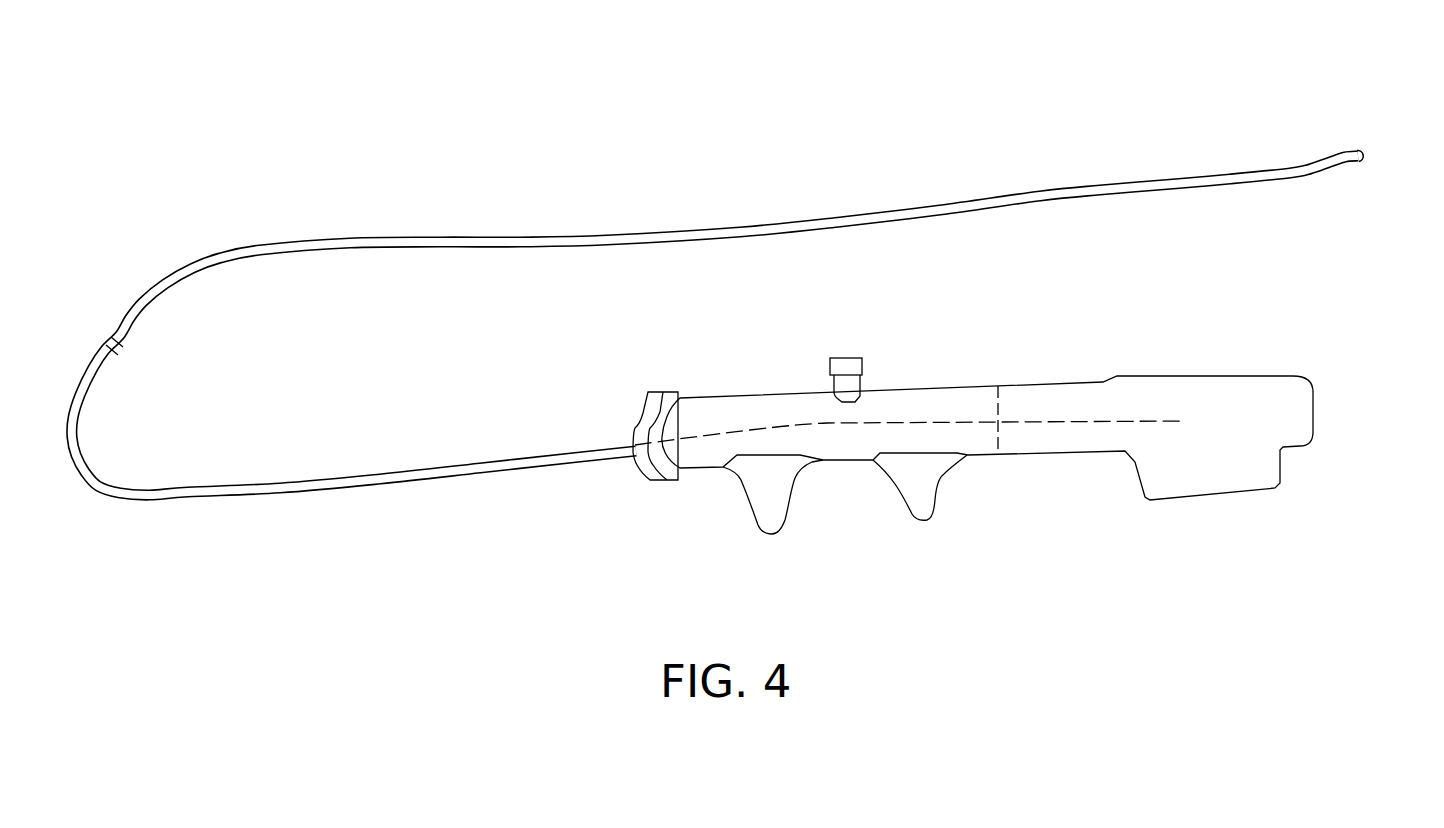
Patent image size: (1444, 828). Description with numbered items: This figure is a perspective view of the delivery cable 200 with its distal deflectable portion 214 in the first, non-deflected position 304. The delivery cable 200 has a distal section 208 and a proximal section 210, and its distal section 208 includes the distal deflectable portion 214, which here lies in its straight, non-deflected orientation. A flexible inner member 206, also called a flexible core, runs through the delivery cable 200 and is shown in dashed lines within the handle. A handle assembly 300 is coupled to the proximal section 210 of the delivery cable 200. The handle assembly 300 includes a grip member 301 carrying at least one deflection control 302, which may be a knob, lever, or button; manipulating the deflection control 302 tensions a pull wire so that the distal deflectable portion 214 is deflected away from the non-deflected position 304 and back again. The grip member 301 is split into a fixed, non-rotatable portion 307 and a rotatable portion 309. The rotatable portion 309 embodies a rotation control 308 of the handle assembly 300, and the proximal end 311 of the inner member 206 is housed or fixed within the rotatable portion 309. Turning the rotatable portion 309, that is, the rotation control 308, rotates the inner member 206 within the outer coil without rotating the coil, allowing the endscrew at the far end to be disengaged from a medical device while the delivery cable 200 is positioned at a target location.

The delivery cable 200 is at (243, 224).
The distal section 208 is at (1115, 150).
The distal deflectable portion 214 is at (1289, 126).
The first, non-deflected position 304 is at (1388, 127).
The proximal section 210 is at (450, 509).
The handle assembly 300 is at (997, 454).
The non-rotatable portion 307 is at (948, 385).
The deflection control 302 is at (862, 358).
The rotation control 308 is at (1311, 345).
The rotatable portion 309 is at (1225, 375).
The grip member 301 is at (1208, 540).
The proximal end 311 is at (1116, 384).
The inner member 206 is at (1082, 423).